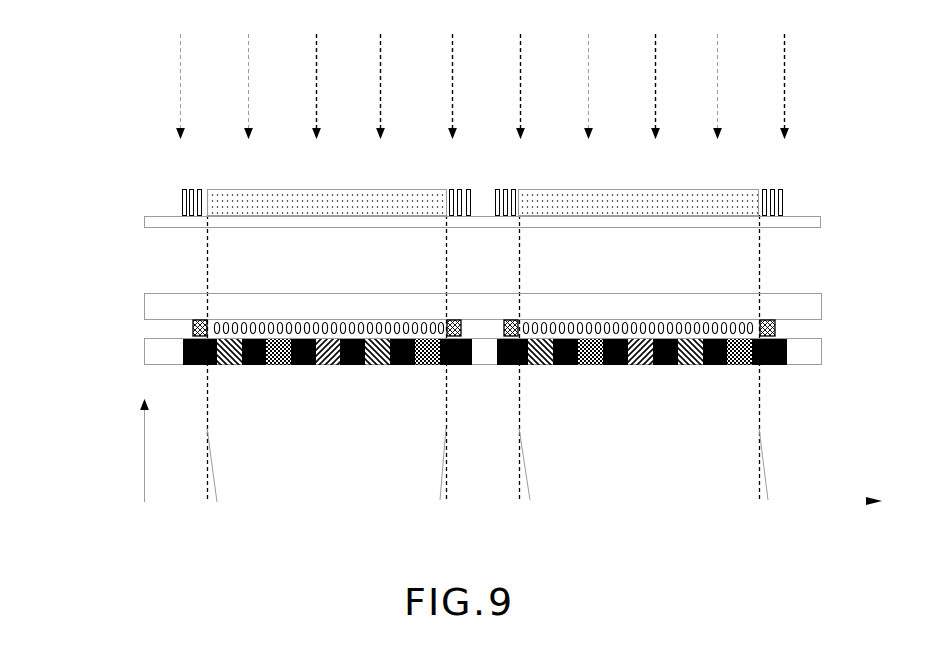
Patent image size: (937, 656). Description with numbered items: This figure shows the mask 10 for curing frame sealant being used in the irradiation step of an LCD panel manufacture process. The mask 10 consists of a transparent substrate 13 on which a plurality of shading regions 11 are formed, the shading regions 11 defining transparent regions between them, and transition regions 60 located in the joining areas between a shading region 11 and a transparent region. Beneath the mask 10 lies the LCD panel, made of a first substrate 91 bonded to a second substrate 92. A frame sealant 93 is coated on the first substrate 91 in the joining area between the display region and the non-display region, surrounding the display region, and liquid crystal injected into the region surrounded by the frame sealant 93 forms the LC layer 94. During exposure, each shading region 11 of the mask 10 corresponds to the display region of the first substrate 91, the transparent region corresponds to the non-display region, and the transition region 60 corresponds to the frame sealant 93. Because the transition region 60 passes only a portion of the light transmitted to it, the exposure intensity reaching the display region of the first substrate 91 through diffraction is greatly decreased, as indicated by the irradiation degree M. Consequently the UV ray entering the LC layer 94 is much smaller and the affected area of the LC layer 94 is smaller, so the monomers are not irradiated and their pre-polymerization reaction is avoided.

The mask 10 is at (423, 191).
The shading region 11 is at (233, 190).
The transition region 60 is at (185, 200).
The transparent substrate 13 is at (165, 223).
The first substrate 91 is at (143, 303).
The LC layer 94 is at (230, 318).
The frame sealant 93 is at (428, 334).
The second substrate 92 is at (145, 351).
The irradiation degree M is at (440, 493).